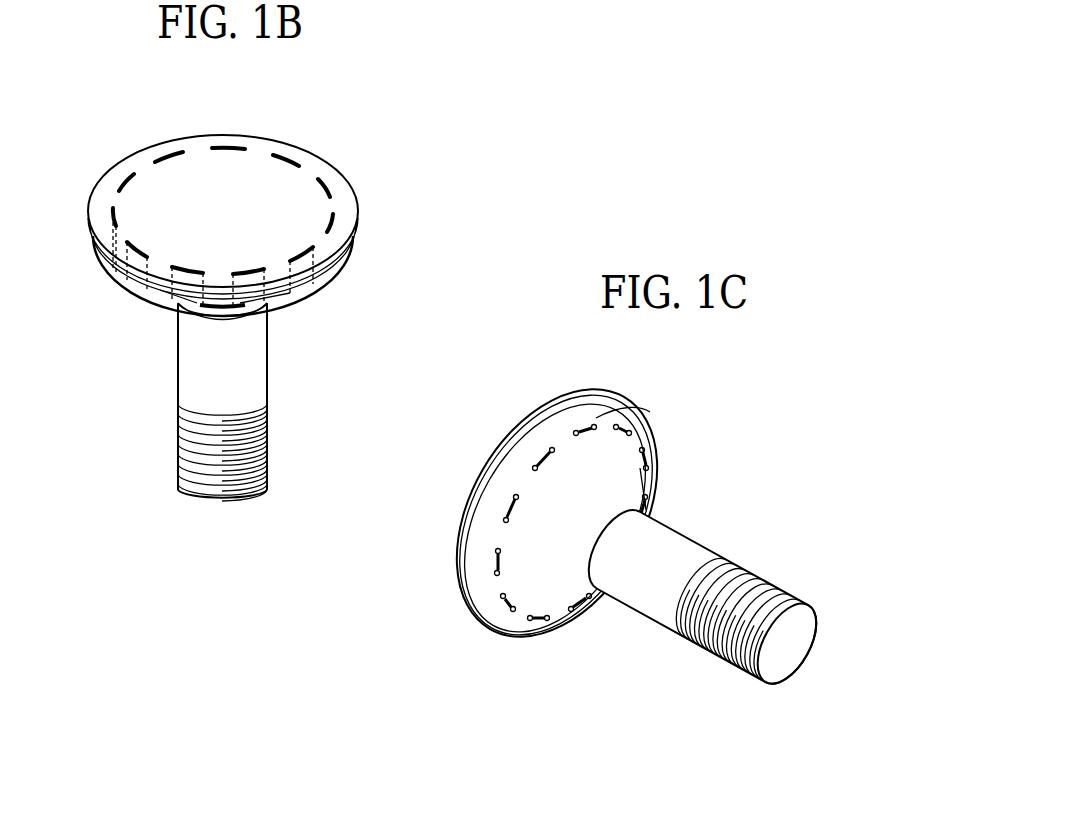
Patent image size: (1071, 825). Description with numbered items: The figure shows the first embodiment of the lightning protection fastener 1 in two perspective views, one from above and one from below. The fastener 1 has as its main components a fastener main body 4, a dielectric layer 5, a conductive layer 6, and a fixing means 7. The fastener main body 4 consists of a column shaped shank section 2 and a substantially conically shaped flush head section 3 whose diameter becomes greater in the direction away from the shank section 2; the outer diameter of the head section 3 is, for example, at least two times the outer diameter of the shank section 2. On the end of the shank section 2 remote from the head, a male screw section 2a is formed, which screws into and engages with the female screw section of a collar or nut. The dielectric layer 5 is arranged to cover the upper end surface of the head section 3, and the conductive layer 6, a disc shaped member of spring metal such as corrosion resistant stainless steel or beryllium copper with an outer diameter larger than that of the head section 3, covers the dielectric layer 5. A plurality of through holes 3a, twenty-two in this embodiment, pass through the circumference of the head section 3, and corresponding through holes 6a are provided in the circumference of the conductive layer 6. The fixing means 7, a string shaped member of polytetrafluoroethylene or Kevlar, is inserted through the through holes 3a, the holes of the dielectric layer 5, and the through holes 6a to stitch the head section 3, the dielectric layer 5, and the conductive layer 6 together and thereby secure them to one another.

In FIG. 1B, the lightning protection fastener 1 is at (270, 283).
In FIG. 1C, the lightning protection fastener 1 is at (615, 537).
In FIG. 1B, the shank section 2 is at (242, 402).
In FIG. 1C, the shank section 2 is at (709, 581).
In FIG. 1B, the male screw section 2a is at (267, 442).
In FIG. 1C, the male screw section 2a is at (757, 587).
In FIG. 1B, the head section 3 is at (200, 316).
In FIG. 1C, the head section 3 is at (563, 577).
In FIG. 1B, the through holes 3a is at (242, 307).
In FIG. 1C, the through holes 3a is at (600, 423).
In FIG. 1B, the fastener main body 4 is at (223, 395).
In FIG. 1C, the fastener main body 4 is at (696, 598).
In FIG. 1B, the dielectric layer 5 is at (137, 287).
In FIG. 1C, the dielectric layer 5 is at (488, 522).
In FIG. 1B, the conductive layer 6 is at (208, 190).
In FIG. 1C, the conductive layer 6 is at (550, 509).
In FIG. 1B, the through holes 6a is at (212, 147).
In FIG. 1B, the fixing means 7 is at (170, 152).
In FIG. 1C, the fixing means 7 is at (497, 567).